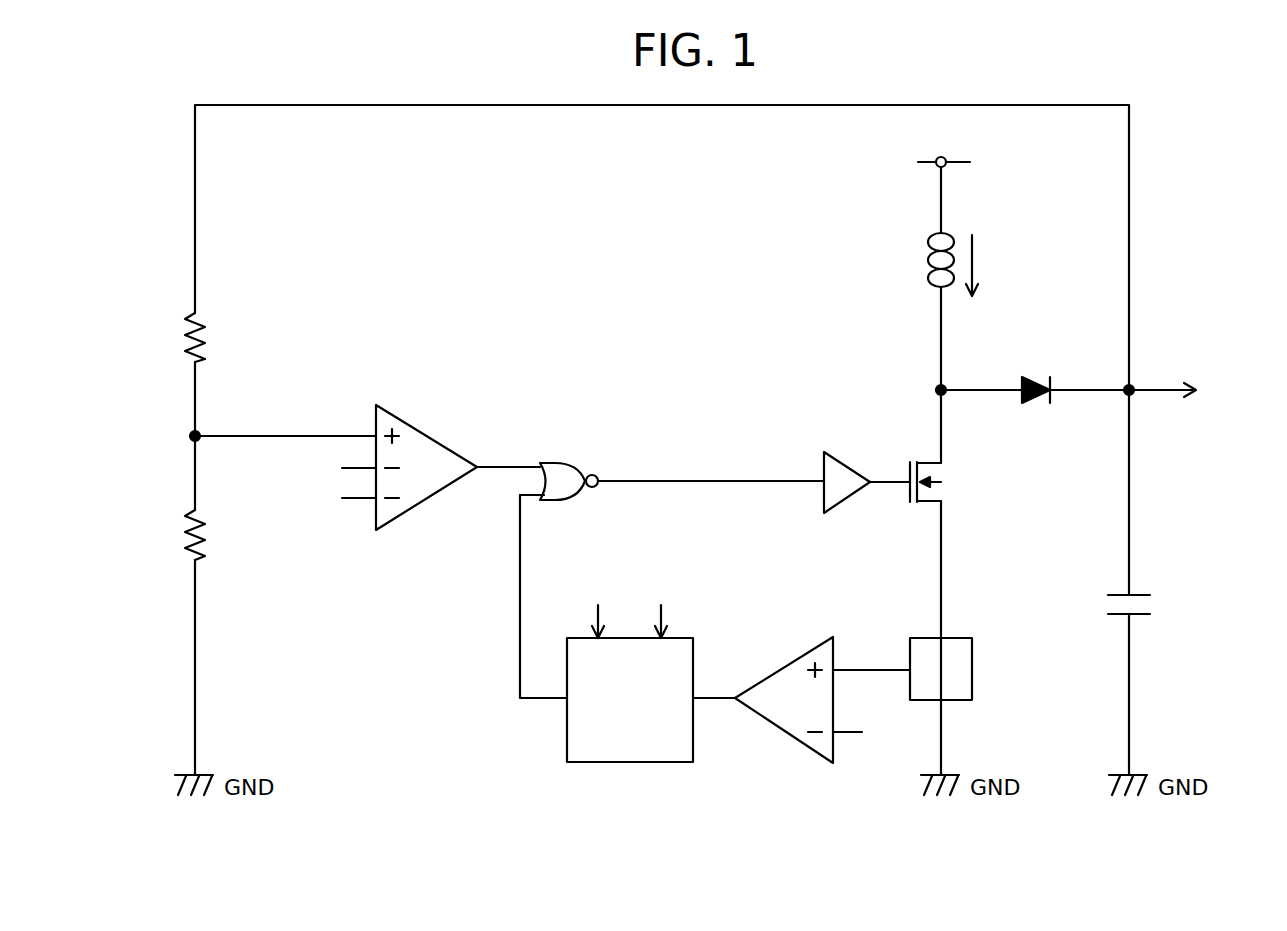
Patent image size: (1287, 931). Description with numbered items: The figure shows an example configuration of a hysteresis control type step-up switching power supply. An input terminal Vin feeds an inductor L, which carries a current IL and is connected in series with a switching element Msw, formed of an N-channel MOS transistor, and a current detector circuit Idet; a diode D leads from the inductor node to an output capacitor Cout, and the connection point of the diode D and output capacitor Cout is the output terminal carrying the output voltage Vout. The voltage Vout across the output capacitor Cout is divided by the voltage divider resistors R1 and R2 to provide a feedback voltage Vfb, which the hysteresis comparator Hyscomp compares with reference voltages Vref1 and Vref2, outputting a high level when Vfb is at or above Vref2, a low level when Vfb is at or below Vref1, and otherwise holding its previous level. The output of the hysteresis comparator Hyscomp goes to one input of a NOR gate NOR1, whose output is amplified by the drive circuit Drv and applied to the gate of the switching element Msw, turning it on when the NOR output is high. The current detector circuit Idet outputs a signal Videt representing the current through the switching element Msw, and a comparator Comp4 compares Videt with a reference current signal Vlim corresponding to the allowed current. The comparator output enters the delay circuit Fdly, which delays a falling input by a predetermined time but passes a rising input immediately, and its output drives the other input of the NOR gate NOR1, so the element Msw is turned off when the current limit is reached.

The voltage divider resistor R1 is at (213, 337).
The voltage divider resistor R2 is at (213, 535).
The feedback voltage Vfb is at (285, 421).
The reference voltage Vref1 is at (329, 467).
The reference voltage Vref2 is at (329, 497).
The hysteresis comparator Hyscomp is at (422, 451).
The NOR gate NOR1 is at (559, 467).
The drive circuit Drv is at (845, 467).
The switching element Msw is at (957, 482).
The input voltage terminal Vin is at (965, 191).
The inductor L is at (929, 311).
The inductor current IL is at (985, 265).
The diode D is at (1035, 374).
The output voltage Vout is at (1189, 390).
The output capacitor Cout is at (1160, 604).
The delay circuit Fdly is at (633, 687).
The comparator Comp4 is at (775, 695).
The output signal of current detector circuit Videt is at (871, 655).
The reference current signal Vlim is at (874, 732).
The current detector circuit Idet is at (968, 669).